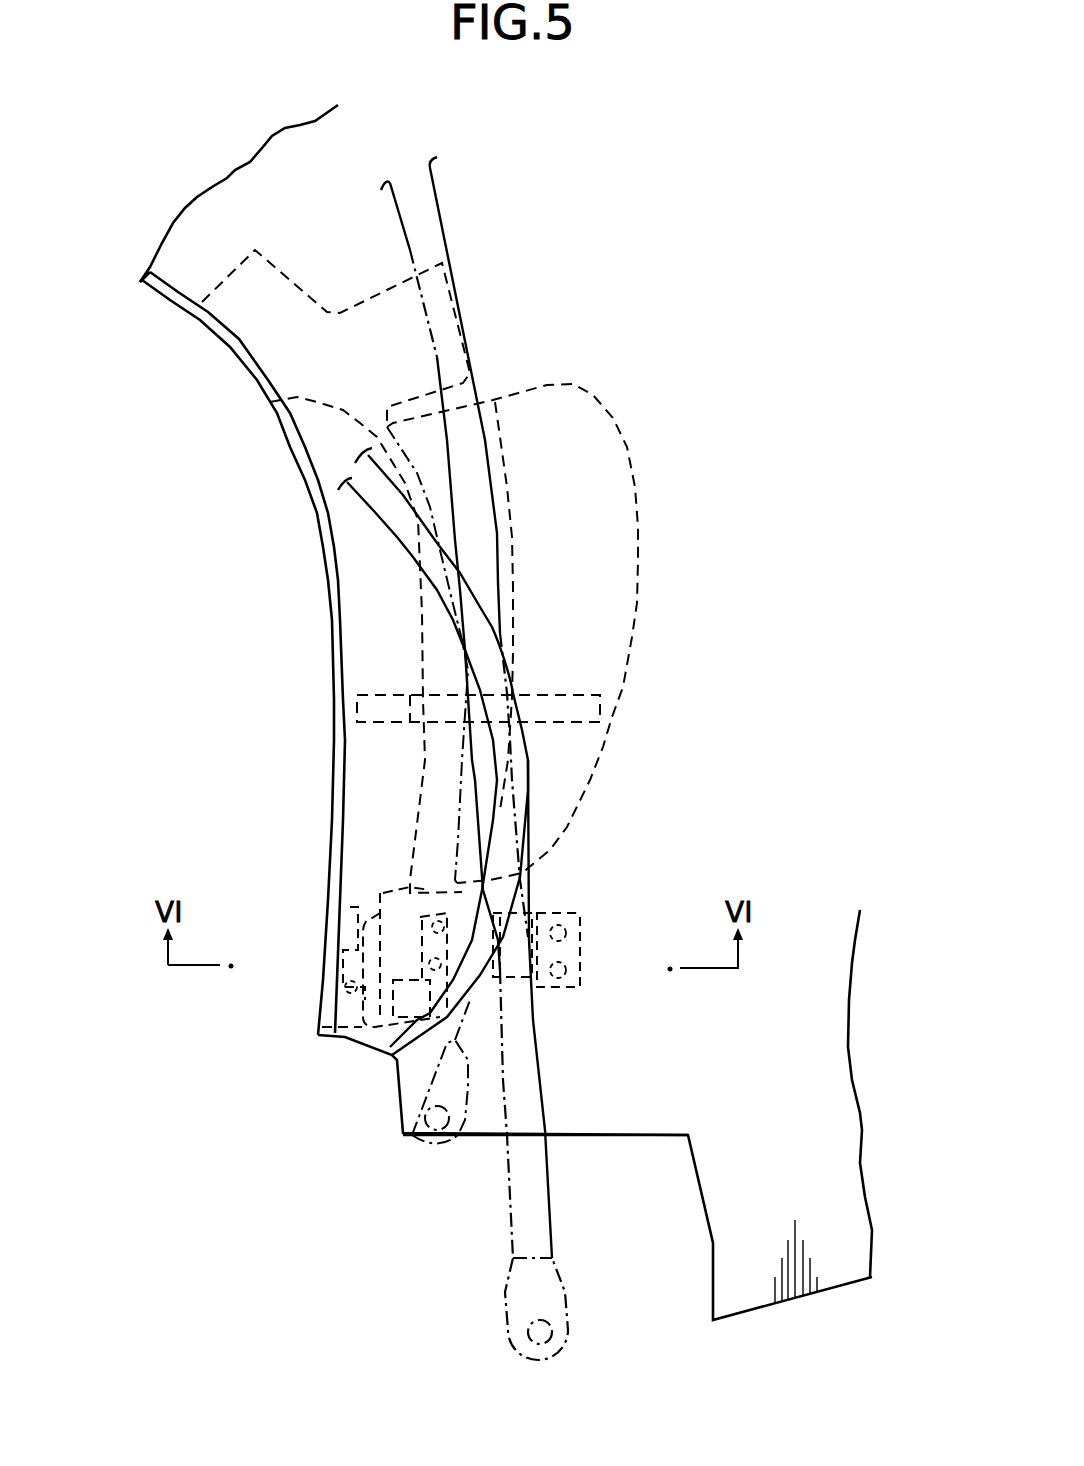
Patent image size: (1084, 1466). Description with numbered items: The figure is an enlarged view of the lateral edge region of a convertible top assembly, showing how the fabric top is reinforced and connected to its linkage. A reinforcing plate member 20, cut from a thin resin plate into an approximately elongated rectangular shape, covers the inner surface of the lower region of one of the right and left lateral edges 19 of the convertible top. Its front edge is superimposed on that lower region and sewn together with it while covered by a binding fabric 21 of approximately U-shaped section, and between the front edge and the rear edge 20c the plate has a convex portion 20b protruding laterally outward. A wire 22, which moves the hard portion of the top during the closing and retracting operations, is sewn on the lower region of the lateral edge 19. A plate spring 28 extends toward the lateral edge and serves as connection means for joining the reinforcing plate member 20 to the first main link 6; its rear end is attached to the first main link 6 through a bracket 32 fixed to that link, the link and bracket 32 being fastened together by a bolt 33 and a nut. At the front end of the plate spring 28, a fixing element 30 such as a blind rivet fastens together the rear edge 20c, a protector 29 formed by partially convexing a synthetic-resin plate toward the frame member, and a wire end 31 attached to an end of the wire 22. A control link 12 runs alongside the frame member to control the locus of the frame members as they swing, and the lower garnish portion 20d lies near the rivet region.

The first main link 6 is at (433, 183).
The control link 12 is at (527, 753).
The lateral edge of the convertible top 19 is at (363, 662).
The reinforcing plate member 20 is at (645, 522).
The convex portion 20b is at (420, 600).
The rear edge 20c is at (506, 478).
The garnish lower portion 20d is at (350, 1037).
The binding fabric 21 is at (312, 533).
The wire 22 is at (350, 923).
The plate spring 28 is at (522, 913).
The protector 29 is at (390, 1057).
The fixing element 30 is at (430, 916).
The wire end 31 is at (358, 1003).
The bracket 32 is at (577, 1135).
The bolt 33 is at (577, 920).